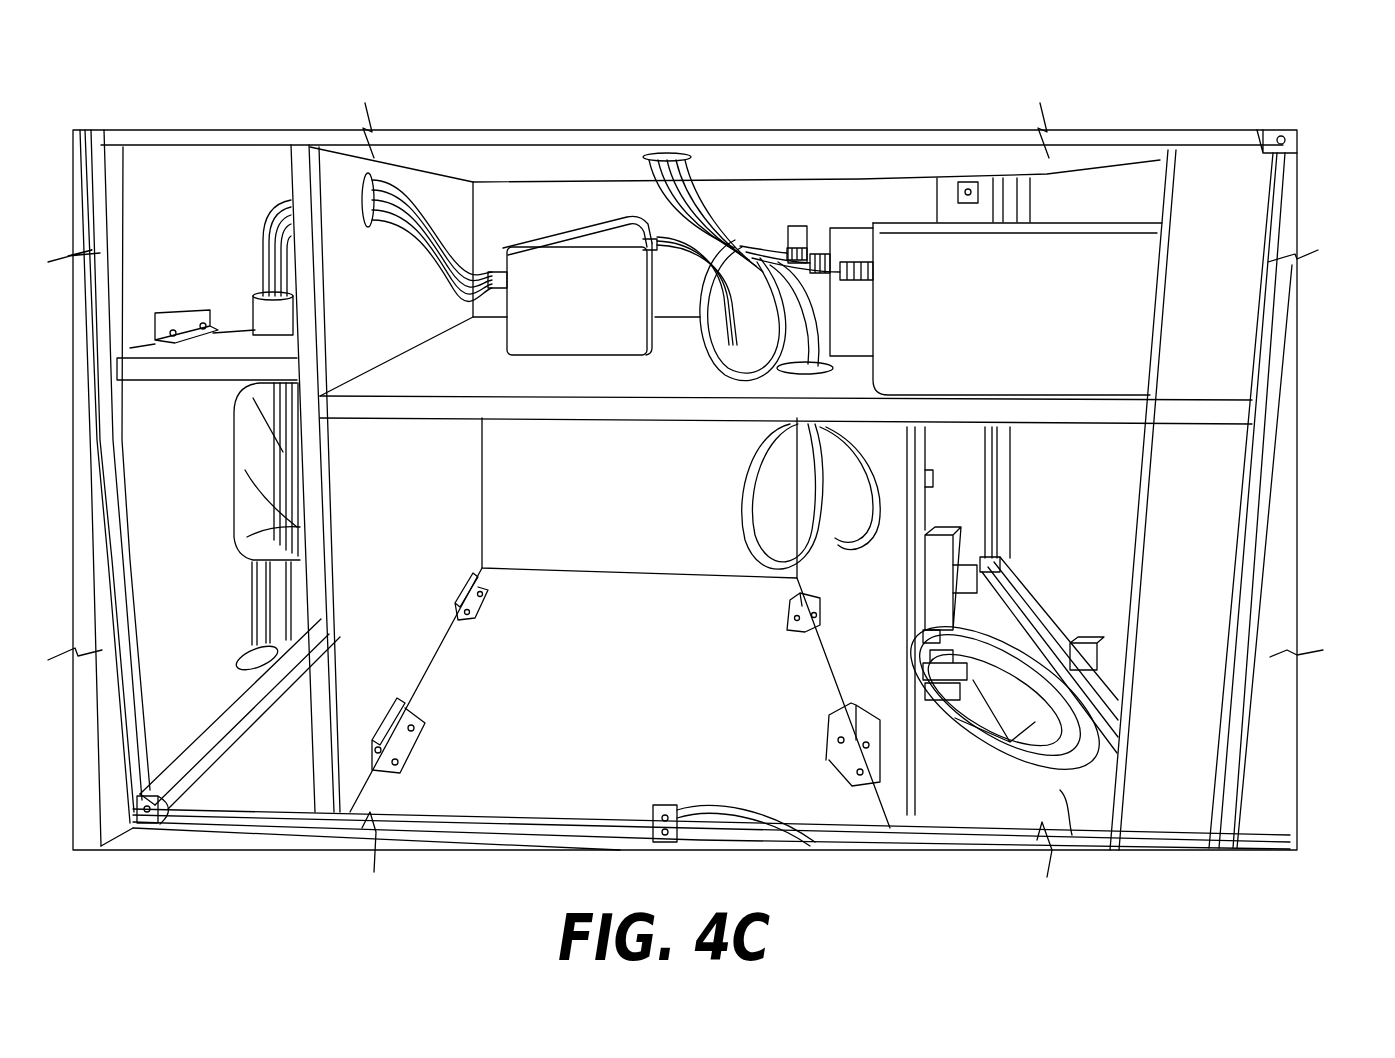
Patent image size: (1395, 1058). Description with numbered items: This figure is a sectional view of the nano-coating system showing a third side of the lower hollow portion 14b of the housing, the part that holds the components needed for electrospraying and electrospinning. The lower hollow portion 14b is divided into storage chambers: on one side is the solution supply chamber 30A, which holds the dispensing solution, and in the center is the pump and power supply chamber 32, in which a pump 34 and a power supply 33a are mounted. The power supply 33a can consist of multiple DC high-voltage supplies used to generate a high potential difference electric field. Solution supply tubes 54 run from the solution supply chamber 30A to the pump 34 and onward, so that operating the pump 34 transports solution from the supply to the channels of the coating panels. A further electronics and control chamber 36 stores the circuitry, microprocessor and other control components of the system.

The lower hollow portion 14b is at (1346, 128).
The solution supply chamber 30A is at (220, 163).
The pump and power supply chamber 32 is at (882, 172).
The power supply 33a is at (1100, 258).
The pump 34 is at (592, 224).
The electronics and control chamber 36 is at (1065, 805).
The solution supply tube 54 is at (280, 218).